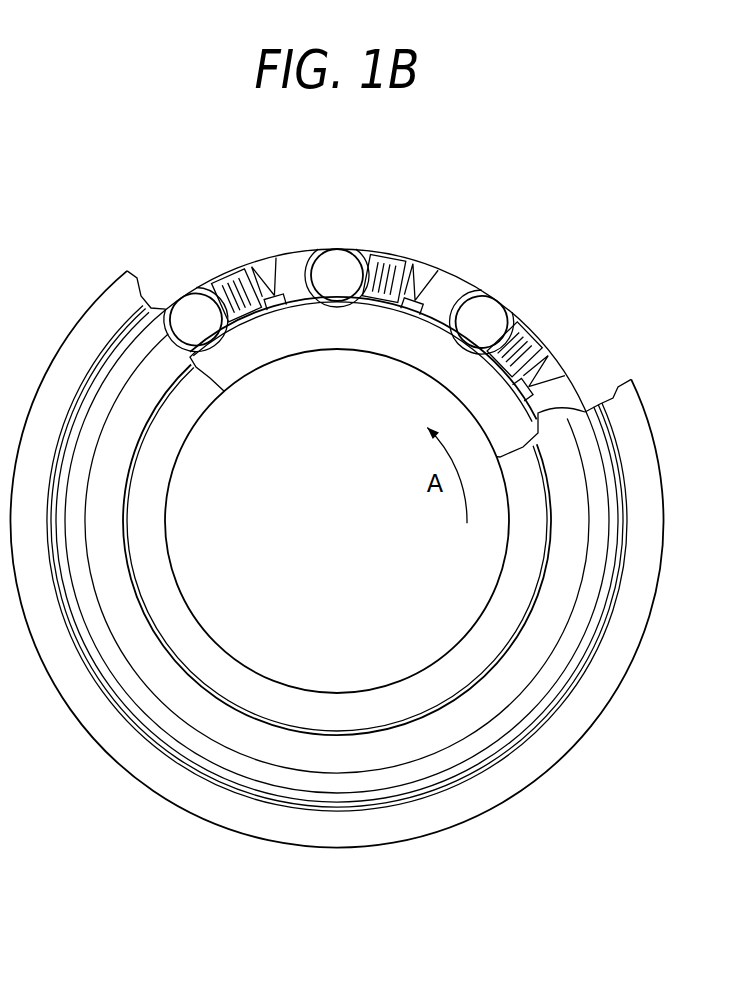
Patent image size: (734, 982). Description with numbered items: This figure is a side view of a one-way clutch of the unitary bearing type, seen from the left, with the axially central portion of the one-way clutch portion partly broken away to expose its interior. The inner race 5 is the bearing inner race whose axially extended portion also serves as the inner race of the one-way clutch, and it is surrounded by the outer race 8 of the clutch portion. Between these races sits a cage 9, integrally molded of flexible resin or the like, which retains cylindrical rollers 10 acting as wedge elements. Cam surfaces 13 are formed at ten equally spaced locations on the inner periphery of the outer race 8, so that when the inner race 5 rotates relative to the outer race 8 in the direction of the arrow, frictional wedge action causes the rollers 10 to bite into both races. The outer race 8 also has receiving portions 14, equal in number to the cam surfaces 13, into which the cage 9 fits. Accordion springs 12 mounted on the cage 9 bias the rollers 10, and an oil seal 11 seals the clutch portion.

The inner race 5 is at (360, 345).
The outer race 8 is at (275, 215).
The cage 9 is at (443, 283).
The cylindrical rollers 10 is at (339, 258).
The oil seal 11 is at (527, 662).
The accordion springs 12 is at (384, 262).
The cam surfaces 13 is at (190, 293).
The receiving portions 14 is at (258, 265).